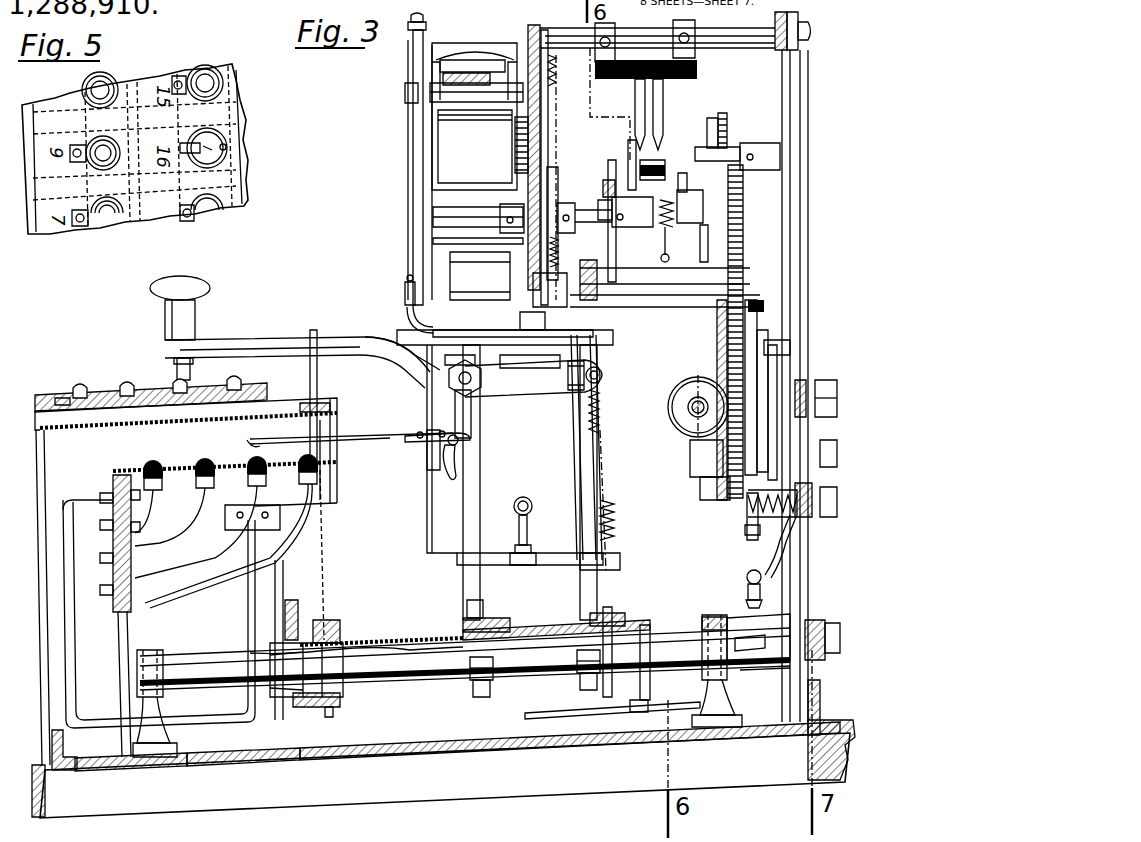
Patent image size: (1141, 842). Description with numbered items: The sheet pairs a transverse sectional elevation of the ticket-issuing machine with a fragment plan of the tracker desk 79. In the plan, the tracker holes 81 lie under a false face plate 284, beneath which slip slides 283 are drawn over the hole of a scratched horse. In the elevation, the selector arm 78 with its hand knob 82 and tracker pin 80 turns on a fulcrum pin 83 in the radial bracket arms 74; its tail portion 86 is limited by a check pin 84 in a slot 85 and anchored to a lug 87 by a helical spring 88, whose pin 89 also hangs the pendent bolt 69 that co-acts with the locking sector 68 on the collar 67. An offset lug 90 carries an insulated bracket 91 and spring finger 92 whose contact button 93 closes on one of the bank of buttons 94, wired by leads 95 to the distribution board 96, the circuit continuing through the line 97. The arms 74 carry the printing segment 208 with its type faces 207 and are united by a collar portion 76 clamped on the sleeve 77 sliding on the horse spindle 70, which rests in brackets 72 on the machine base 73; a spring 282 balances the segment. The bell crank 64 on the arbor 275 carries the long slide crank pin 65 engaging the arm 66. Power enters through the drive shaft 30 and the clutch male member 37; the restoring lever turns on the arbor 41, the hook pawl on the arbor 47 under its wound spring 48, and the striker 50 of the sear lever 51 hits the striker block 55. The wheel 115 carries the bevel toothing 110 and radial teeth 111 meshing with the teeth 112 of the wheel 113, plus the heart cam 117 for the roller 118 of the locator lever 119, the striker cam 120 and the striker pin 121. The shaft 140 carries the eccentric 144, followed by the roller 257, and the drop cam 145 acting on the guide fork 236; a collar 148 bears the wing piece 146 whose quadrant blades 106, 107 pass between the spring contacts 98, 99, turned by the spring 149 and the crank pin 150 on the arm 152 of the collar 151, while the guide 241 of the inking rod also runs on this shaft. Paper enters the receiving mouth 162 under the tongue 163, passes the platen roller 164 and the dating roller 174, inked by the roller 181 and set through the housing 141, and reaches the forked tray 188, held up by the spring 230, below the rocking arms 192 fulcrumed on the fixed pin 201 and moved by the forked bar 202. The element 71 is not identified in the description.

In FIG. 5, the tracker holes 81 is at (212, 82).
In FIG. 3, the tracker holes 81 is at (128, 386).
In FIG. 5, the slip slides 283 is at (247, 132).
In FIG. 5, the false face plate 284 is at (220, 180).
In FIG. 3, the false face plate 284 is at (50, 397).
In FIG. 3, the machine base 73 is at (320, 762).
In FIG. 3, the frame bar 71 is at (790, 318).
In FIG. 3, the forked bar 202 is at (795, 300).
In FIG. 3, the locator lever 119 is at (792, 432).
In FIG. 3, the fixed pin 201 is at (733, 150).
In FIG. 3, the spring contact blade 99 is at (636, 96).
In FIG. 3, the spring contact blade 98 is at (664, 98).
In FIG. 3, the gear teeth 112 is at (723, 113).
In FIG. 3, the wheel 113 is at (707, 118).
In FIG. 3, the housing 141 is at (402, 159).
In FIG. 3, the platen roller 164 is at (474, 116).
In FIG. 3, the spring-backed tongue 163 is at (447, 72).
In FIG. 3, the receiving mouth 162 is at (478, 41).
In FIG. 3, the shaft 140 is at (460, 210).
In FIG. 3, the dating roller 174 is at (455, 243).
In FIG. 3, the inking roller 181 is at (500, 294).
In FIG. 3, the spring 230 is at (552, 72).
In FIG. 3, the drop cam 145 is at (558, 168).
In FIG. 3, the guide fork 236 is at (556, 190).
In FIG. 3, the roller 257 is at (603, 190).
In FIG. 3, the eccentric 144 is at (616, 250).
In FIG. 3, the collar 148 is at (619, 212).
In FIG. 3, the crank pin 150 is at (650, 190).
In FIG. 3, the switch quadrant blade 107 is at (638, 146).
In FIG. 3, the switch quadrant blade 106 is at (660, 152).
In FIG. 3, the wing piece 146 is at (660, 160).
In FIG. 3, the arm 152 is at (680, 196).
In FIG. 3, the collar 151 is at (695, 206).
In FIG. 3, the coiled spring 149 is at (668, 237).
In FIG. 3, the guide 241 is at (705, 236).
In FIG. 3, the rocking arms 192 is at (582, 268).
In FIG. 3, the forked tray 188 is at (546, 327).
In FIG. 3, the type face 207 is at (405, 293).
In FIG. 3, the striker cam 120 is at (745, 355).
In FIG. 3, the bevel crown wheel 110 is at (725, 318).
In FIG. 3, the wheel 115 is at (728, 348).
In FIG. 3, the radial gear teeth 111 is at (742, 352).
In FIG. 3, the heart cam 117 is at (786, 352).
In FIG. 3, the roller 118 is at (790, 362).
In FIG. 3, the male member of clutch 37 is at (690, 382).
In FIG. 3, the drive shaft 30 is at (688, 408).
In FIG. 3, the arbor 41 is at (690, 462).
In FIG. 3, the offset striker pin 121 is at (705, 480).
In FIG. 3, the arbor 47 is at (748, 508).
In FIG. 3, the wound spring 48 is at (747, 530).
In FIG. 3, the striker block 55 is at (746, 538).
In FIG. 3, the sear lever 51 is at (775, 544).
In FIG. 3, the adjustable striker 50 is at (747, 578).
In FIG. 3, the fulcrum pin 83 is at (452, 382).
In FIG. 3, the tail portion 86 is at (526, 376).
In FIG. 3, the check pin 84 is at (595, 368).
In FIG. 3, the pin 89 is at (603, 375).
In FIG. 3, the slot 85 is at (606, 386).
In FIG. 3, the downwardly offset lug 90 is at (471, 412).
In FIG. 3, the pendent bolt 69 is at (600, 455).
In FIG. 3, the helical spring 88 is at (616, 517).
In FIG. 3, the helical spring 282 is at (530, 505).
In FIG. 3, the lug 87 is at (620, 572).
In FIG. 3, the bracket 91 is at (412, 443).
In FIG. 3, the line 97 is at (447, 470).
In FIG. 3, the printing segment 208 is at (415, 472).
In FIG. 3, the hand knob 82 is at (203, 286).
In FIG. 3, the selector arm 78 is at (330, 350).
In FIG. 3, the tracker pin 80 is at (192, 368).
In FIG. 3, the tracker desk 79 is at (82, 388).
In FIG. 3, the radial bracket arms 74 is at (241, 592).
In FIG. 3, the contact button 93 is at (250, 441).
In FIG. 3, the spring finger 92 is at (352, 442).
In FIG. 3, the contact buttons 94 is at (203, 466).
In FIG. 3, the distribution board 96 is at (113, 604).
In FIG. 3, the connections 95 is at (198, 568).
In FIG. 3, the horse spindle 70 is at (200, 662).
In FIG. 3, the brackets 72 is at (137, 673).
In FIG. 3, the collar portion 76 is at (522, 632).
In FIG. 3, the long sleeve 77 is at (425, 642).
In FIG. 3, the locking sector 68 is at (614, 612).
In FIG. 3, the collar 67 is at (632, 625).
In FIG. 3, the arm 66 is at (650, 676).
In FIG. 3, the bell crank 64 is at (788, 676).
In FIG. 3, the arbor 275 is at (738, 640).
In FIG. 3, the long slide crank pin 65 is at (700, 708).